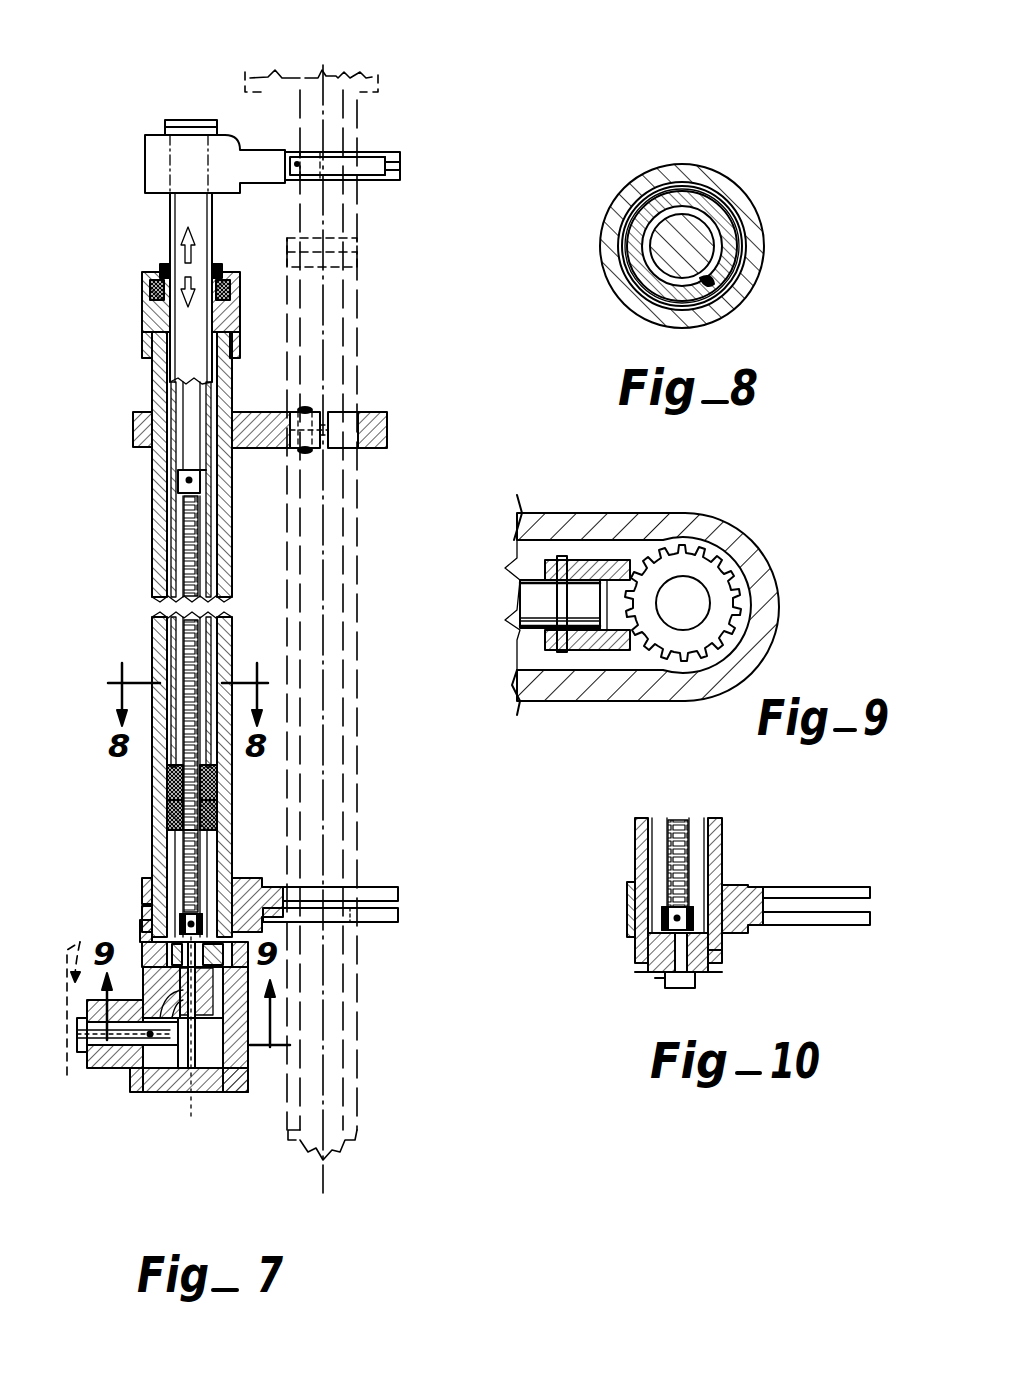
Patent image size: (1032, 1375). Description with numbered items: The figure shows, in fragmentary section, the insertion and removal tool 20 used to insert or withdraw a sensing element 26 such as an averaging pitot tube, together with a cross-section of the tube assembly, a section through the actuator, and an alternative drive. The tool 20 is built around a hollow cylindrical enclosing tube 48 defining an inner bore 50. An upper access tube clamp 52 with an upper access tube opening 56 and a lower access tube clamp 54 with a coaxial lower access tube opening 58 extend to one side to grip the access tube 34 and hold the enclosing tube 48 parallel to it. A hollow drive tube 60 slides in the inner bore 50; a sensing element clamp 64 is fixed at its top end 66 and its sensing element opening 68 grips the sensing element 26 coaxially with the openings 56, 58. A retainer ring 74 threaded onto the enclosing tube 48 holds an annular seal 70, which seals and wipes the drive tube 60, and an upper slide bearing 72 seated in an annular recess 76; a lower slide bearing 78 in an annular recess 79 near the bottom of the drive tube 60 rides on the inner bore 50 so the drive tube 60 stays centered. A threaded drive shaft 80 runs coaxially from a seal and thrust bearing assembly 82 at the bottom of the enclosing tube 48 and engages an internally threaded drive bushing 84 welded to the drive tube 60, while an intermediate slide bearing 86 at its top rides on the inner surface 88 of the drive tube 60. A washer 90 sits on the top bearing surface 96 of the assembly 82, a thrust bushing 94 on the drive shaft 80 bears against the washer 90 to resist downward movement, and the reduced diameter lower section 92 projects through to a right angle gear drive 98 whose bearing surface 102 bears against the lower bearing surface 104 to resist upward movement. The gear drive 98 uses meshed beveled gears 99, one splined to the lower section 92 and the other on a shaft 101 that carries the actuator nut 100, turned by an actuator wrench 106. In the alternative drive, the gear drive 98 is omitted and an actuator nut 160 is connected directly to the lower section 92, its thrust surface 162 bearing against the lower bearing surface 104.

In FIG. 7, the insertion and removal tool 20 is at (212, 55).
In FIG. 7, the sensing element 26 is at (340, 218).
In FIG. 7, the access tube 34 is at (355, 690).
In FIG. 7, the enclosing tube 48 is at (152, 555).
In FIG. 8, the enclosing tube 48 is at (700, 178).
In FIG. 10, the enclosing tube 48 is at (722, 842).
In FIG. 7, the inner bore 50 is at (171, 510).
In FIG. 8, the inner bore 50 is at (740, 228).
In FIG. 7, the upper access tube clamp 52 is at (133, 425).
In FIG. 7, the lower access tube clamp 54 is at (142, 880).
In FIG. 10, the lower access tube clamp 54 is at (630, 896).
In FIG. 7, the upper access tube opening 56 is at (290, 420).
In FIG. 7, the lower access tube opening 58 is at (283, 890).
In FIG. 7, the drive tube 60 is at (170, 210).
In FIG. 8, the drive tube 60 is at (725, 200).
In FIG. 7, the sensing element clamp 64 is at (145, 160).
In FIG. 7, the top end 66 is at (197, 120).
In FIG. 7, the sensing element opening 68 is at (310, 160).
In FIG. 7, the annular seal 70 is at (168, 268).
In FIG. 7, the upper slide bearing 72 is at (232, 285).
In FIG. 7, the retainer ring 74 is at (152, 340).
In FIG. 7, the annular recess 76 is at (150, 292).
In FIG. 7, the lower slide bearing 78 is at (170, 780).
In FIG. 7, the annular recess 79 is at (215, 765).
In FIG. 7, the drive shaft 80 is at (185, 570).
In FIG. 8, the drive shaft 80 is at (720, 285).
In FIG. 10, the drive shaft 80 is at (668, 845).
In FIG. 7, the seal and thrust bearing assembly 82 is at (255, 975).
In FIG. 10, the seal and thrust bearing assembly 82 is at (712, 938).
In FIG. 7, the drive bushing 84 is at (215, 835).
In FIG. 7, the intermediate slide bearing 86 is at (205, 490).
In FIG. 7, the inner surface 88 is at (202, 462).
In FIG. 8, the inner surface 88 is at (714, 284).
In FIG. 7, the washer 90 is at (202, 915).
In FIG. 10, the washer 90 is at (662, 918).
In FIG. 7, the reduced diameter lower section 92 is at (213, 1000).
In FIG. 10, the reduced diameter lower section 92 is at (676, 958).
In FIG. 7, the thrust bushing 94 is at (150, 905).
In FIG. 10, the thrust bushing 94 is at (722, 892).
In FIG. 7, the top bearing surface 96 is at (272, 922).
In FIG. 7, the right angle gear drive 98 is at (250, 1095).
In FIG. 9, the right angle gear drive 98 is at (758, 538).
In FIG. 7, the beveled gears 99 is at (192, 1095).
In FIG. 9, the beveled gears 99 is at (626, 660).
In FIG. 7, the actuator nut 100 is at (85, 1062).
In FIG. 7, the shaft 101 is at (140, 1080).
In FIG. 7, the bearing surface 102 is at (142, 922).
In FIG. 7, the lower bearing surface 104 is at (88, 1080).
In FIG. 10, the lower bearing surface 104 is at (665, 977).
In FIG. 7, the actuator wrench 106 is at (94, 991).
In FIG. 10, the actuator nut 160 is at (695, 985).
In FIG. 10, the thrust surface 162 is at (715, 960).